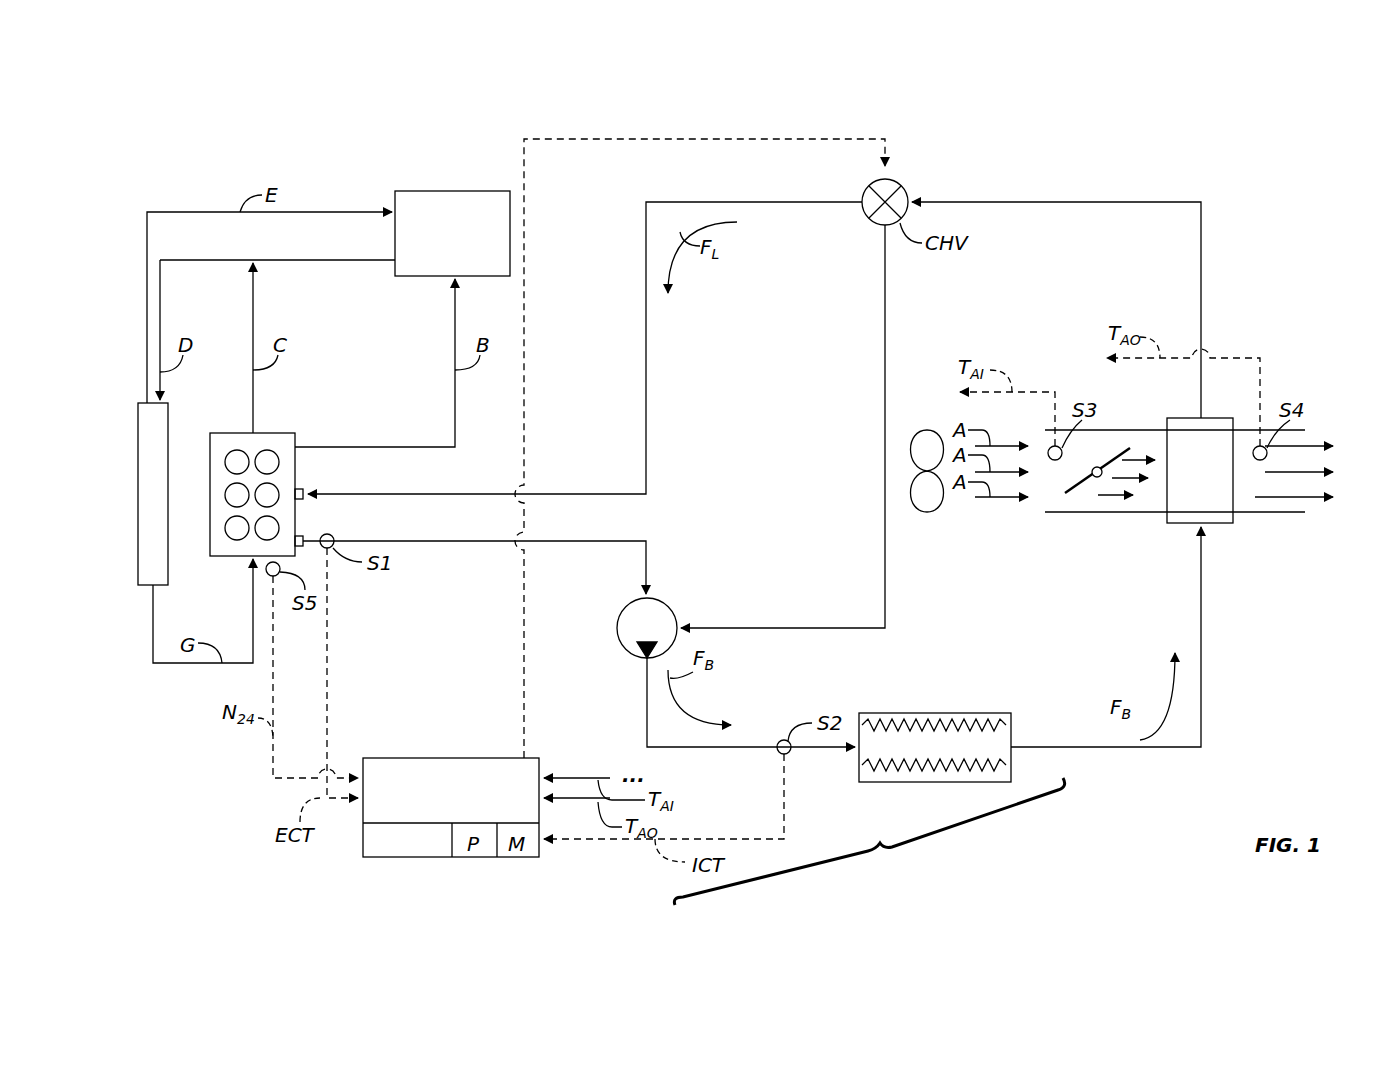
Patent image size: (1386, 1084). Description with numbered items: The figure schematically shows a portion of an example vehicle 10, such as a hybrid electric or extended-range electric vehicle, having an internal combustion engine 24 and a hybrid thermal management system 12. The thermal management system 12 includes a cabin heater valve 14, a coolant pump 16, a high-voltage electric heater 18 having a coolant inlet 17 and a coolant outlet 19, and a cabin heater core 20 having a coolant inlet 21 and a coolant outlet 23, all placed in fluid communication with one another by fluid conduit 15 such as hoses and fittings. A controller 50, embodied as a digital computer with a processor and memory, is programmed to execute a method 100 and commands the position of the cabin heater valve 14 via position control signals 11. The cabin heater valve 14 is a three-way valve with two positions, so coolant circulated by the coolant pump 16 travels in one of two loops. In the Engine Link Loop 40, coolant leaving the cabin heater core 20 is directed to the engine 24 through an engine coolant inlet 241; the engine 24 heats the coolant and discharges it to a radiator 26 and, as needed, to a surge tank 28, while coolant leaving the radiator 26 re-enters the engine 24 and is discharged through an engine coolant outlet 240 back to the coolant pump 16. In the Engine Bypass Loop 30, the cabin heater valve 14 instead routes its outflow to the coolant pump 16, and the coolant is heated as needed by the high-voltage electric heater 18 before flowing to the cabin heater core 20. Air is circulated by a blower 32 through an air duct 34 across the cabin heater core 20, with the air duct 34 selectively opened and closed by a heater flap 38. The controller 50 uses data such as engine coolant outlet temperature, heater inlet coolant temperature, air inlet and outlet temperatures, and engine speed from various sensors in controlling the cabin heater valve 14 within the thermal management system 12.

The vehicle 10 is at (1237, 132).
The position control signals 11 is at (526, 662).
The hybrid thermal management system 12 is at (869, 841).
The cabin heater valve 14 is at (905, 188).
The fluid conduit 15 is at (423, 541).
The coolant pump 16 is at (659, 637).
The coolant inlet 17 is at (857, 757).
The high-voltage electric heater 18 is at (935, 713).
The coolant outlet 19 is at (1015, 745).
The cabin heater core 20 is at (1220, 524).
The coolant inlet 21 is at (1192, 525).
The coolant outlet 23 is at (1203, 418).
The internal combustion engine 24 is at (232, 433).
The radiator 26 is at (170, 504).
The surge tank 28 is at (465, 250).
The Engine Bypass Loop 30 is at (823, 505).
The blower 32 is at (927, 512).
The air duct 34 is at (1150, 512).
The heater flap 38 is at (1063, 493).
The Engine Link Loop 40 is at (420, 587).
The controller 50 is at (464, 804).
The method 100 is at (426, 854).
The engine coolant outlet 240 is at (303, 537).
The engine coolant inlet 241 is at (303, 490).